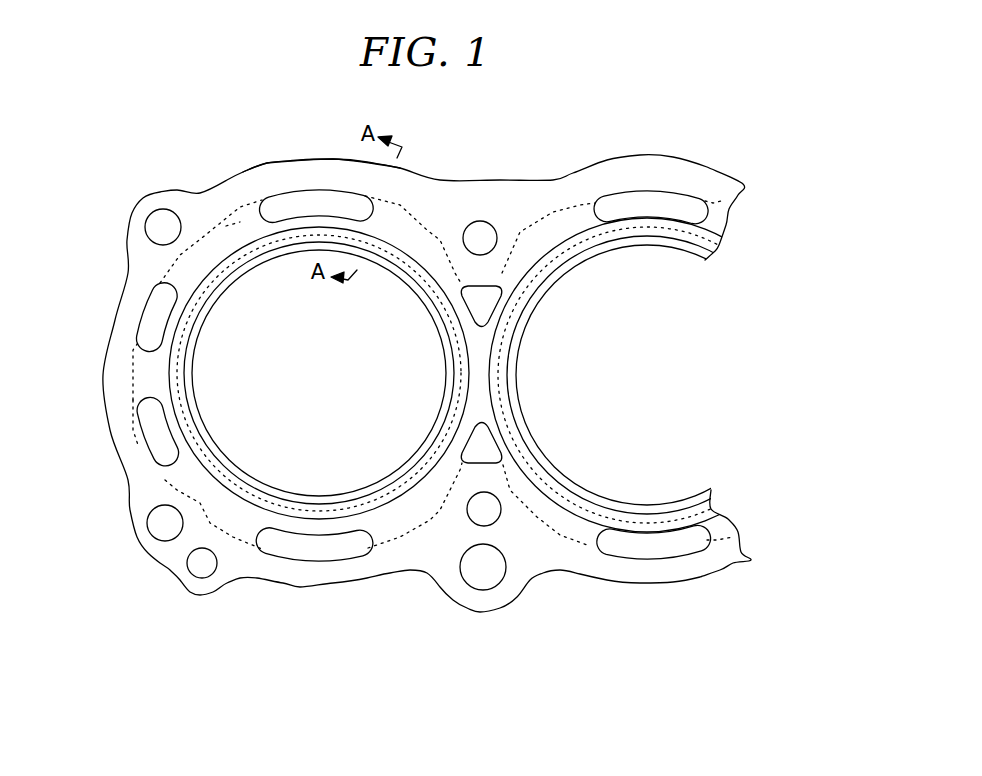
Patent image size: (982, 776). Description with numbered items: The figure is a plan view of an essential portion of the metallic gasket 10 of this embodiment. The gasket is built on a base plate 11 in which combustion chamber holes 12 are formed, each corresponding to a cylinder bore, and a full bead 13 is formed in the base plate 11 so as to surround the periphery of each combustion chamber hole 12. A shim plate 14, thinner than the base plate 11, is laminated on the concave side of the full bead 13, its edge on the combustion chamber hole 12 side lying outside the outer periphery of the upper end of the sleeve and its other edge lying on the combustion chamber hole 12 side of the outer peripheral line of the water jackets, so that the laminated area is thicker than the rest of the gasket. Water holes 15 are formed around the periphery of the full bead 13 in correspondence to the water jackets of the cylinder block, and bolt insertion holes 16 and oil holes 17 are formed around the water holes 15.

The metallic gasket 10 is at (584, 186).
The base plate 11 is at (318, 159).
The combustion chamber hole 12 is at (293, 504).
The full bead 13 is at (568, 247).
The shim plate 14 is at (233, 223).
The water hole 15 is at (287, 198).
The bolt insertion hole 16 is at (168, 225).
The oil hole 17 is at (203, 565).